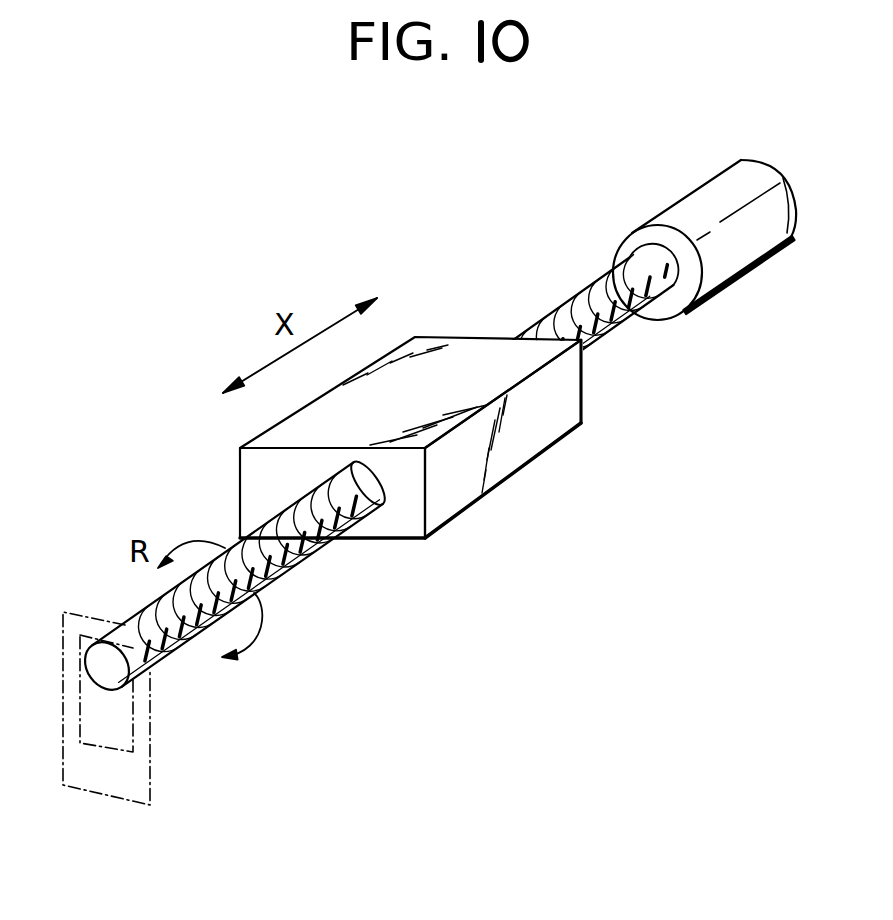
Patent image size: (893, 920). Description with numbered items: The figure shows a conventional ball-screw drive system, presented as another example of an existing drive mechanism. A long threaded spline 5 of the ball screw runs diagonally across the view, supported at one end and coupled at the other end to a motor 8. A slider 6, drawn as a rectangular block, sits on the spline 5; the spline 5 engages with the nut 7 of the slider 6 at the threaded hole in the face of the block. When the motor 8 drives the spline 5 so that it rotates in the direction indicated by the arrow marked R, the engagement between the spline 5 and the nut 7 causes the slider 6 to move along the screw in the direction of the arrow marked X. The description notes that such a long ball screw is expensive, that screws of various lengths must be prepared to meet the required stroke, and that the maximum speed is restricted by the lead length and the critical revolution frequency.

The spline 5 is at (193, 643).
The slider 6 is at (552, 421).
The nut 7 is at (380, 482).
The motor 8 is at (692, 188).